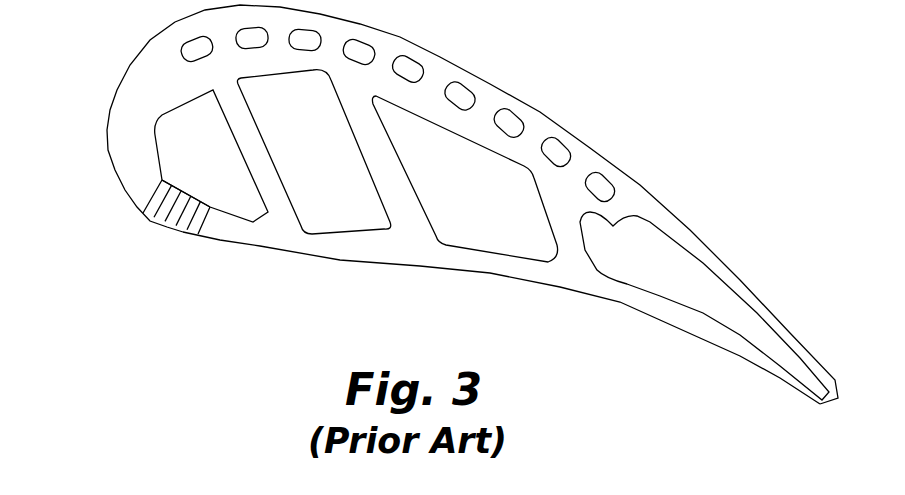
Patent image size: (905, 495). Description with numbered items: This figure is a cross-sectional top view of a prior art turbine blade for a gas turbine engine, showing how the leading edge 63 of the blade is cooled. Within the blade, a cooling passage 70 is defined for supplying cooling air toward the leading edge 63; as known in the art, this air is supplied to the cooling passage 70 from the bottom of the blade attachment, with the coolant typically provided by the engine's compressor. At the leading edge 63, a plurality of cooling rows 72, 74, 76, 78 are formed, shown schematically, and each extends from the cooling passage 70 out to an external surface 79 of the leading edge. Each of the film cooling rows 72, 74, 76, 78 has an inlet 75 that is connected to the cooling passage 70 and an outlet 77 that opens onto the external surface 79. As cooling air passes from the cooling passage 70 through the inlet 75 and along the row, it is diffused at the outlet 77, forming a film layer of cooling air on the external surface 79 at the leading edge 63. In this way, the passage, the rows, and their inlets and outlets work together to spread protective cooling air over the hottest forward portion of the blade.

The leading edge 63 is at (174, 235).
The cooling passage 70 is at (168, 150).
The cooling row 72 is at (153, 218).
The cooling row 74 is at (157, 221).
The inlet 75 is at (163, 181).
The cooling row 76 is at (173, 227).
The outlet 77 is at (125, 127).
The cooling row 78 is at (177, 230).
The external surface 79 is at (263, 248).